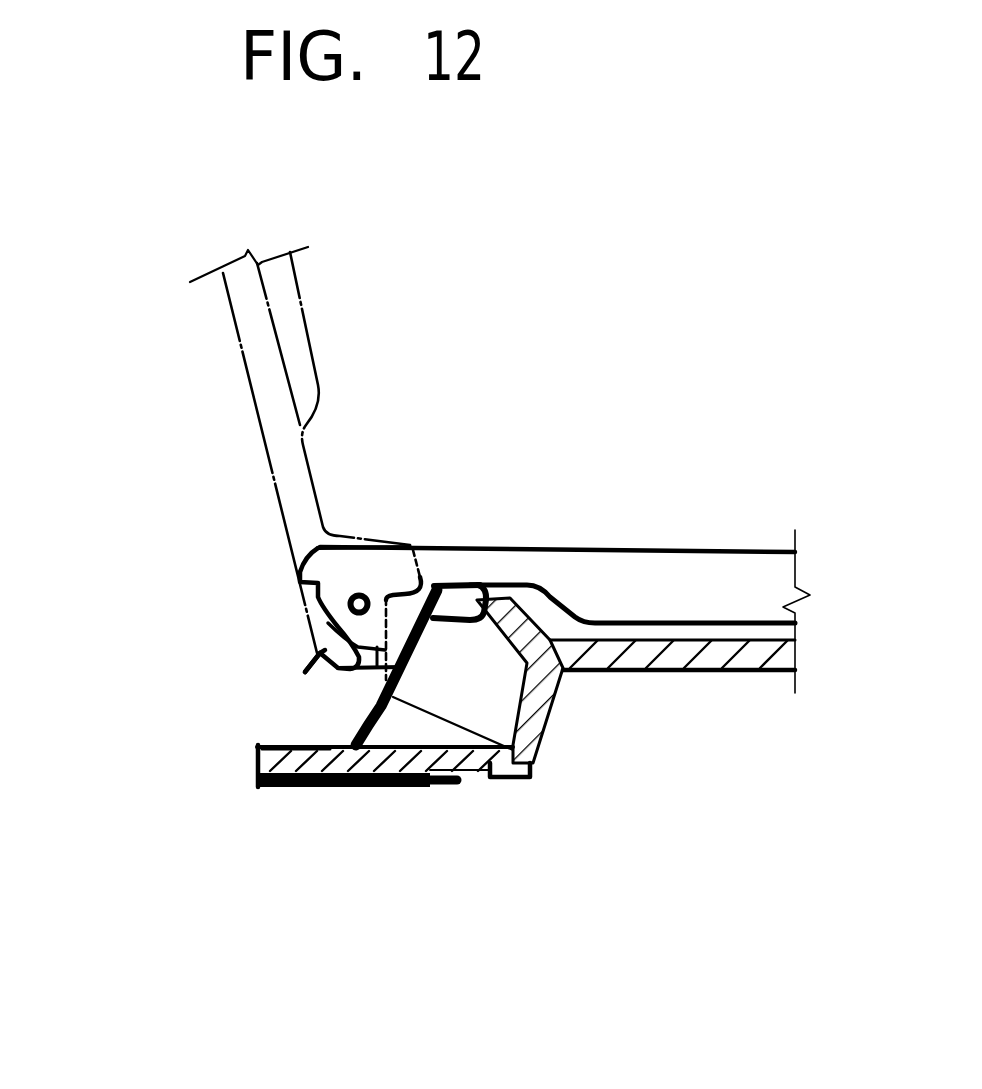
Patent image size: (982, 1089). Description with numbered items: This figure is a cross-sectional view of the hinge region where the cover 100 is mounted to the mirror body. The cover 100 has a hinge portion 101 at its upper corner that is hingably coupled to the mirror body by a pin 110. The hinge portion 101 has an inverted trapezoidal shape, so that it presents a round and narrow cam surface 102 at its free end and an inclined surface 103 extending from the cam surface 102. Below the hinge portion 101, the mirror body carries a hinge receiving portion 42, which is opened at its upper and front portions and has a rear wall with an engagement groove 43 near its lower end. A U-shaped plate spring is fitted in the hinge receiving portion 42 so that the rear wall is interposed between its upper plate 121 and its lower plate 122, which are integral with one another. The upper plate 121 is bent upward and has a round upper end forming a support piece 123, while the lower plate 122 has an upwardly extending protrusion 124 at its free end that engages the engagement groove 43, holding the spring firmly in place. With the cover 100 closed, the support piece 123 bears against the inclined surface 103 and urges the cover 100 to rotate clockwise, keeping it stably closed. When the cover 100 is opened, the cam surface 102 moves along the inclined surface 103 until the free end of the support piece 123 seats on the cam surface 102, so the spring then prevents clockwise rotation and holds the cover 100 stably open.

The cover 100 is at (658, 563).
The hinge portion 101 is at (308, 606).
The cam surface 102 is at (306, 671).
The inclined surface 103 is at (426, 646).
The pin 110 is at (356, 596).
The upper plate 121 is at (287, 742).
The lower plate 122 is at (346, 788).
The support piece 123 is at (533, 770).
The protrusion 124 is at (430, 790).
The hinge receiving portion 42 is at (260, 787).
The engagement groove 43 is at (477, 776).